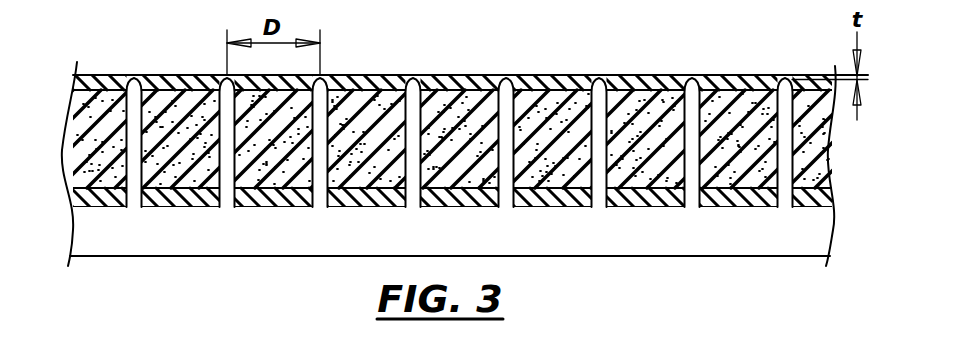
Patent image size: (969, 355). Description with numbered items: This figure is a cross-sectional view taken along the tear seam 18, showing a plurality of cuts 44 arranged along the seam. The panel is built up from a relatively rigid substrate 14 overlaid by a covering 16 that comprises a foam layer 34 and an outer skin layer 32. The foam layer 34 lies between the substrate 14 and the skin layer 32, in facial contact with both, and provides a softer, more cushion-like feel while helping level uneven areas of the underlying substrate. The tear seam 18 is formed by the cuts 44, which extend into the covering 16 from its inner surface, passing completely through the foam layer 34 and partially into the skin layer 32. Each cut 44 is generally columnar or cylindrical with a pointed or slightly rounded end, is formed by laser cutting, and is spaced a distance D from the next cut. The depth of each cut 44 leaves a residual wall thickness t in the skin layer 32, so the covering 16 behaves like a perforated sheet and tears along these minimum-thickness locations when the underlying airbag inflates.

The substrate 14 is at (74, 198).
The covering 16 is at (40, 128).
The tear seam 18 is at (456, 130).
The skin layer 32 is at (115, 77).
The foam layer 34 is at (86, 124).
The cuts 44 is at (606, 100).